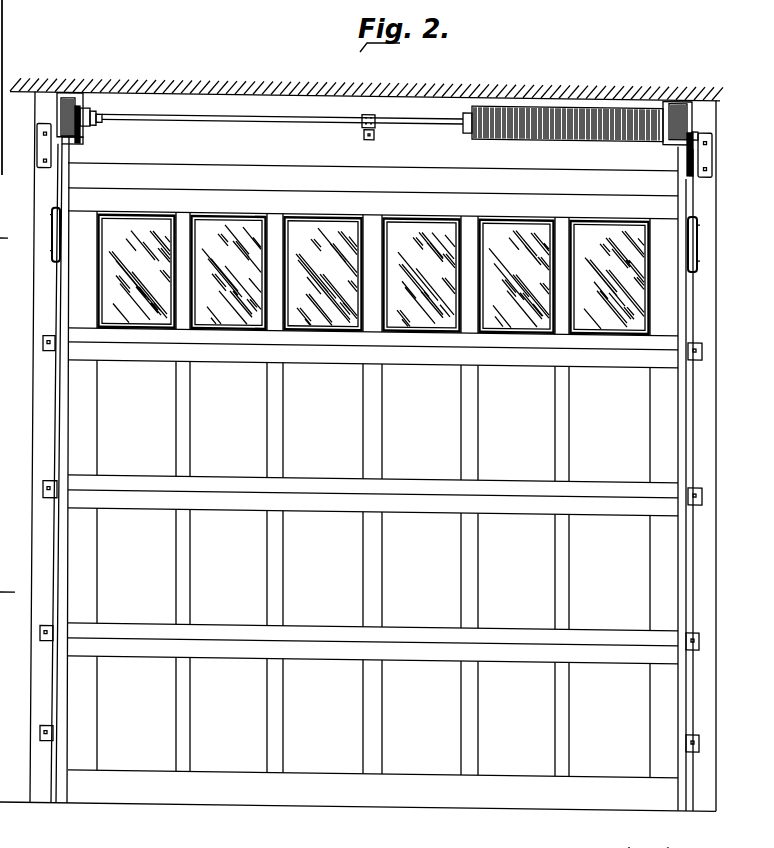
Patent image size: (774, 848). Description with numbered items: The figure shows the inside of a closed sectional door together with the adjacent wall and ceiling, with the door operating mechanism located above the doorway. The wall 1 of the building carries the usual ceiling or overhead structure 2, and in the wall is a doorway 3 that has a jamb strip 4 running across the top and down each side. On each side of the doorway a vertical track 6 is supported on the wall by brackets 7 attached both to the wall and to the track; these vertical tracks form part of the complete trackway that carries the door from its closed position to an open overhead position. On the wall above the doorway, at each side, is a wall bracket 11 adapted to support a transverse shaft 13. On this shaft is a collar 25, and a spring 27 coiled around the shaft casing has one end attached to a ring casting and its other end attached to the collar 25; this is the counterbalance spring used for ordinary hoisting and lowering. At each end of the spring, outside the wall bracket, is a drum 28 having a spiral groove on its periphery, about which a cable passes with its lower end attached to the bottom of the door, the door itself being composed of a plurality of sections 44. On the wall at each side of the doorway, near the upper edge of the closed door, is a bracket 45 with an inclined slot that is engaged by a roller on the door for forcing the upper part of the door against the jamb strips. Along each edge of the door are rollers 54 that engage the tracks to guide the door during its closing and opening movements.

The wall 1 is at (21, 144).
The ceiling 2 is at (259, 58).
The doorway 3 is at (216, 90).
The jamb strip 4 is at (42, 94).
The vertical track 6 is at (0, 184).
The bracket 7 is at (47, 479).
The wall bracket 11 is at (65, 97).
The transverse shaft 13 is at (183, 116).
The collar 25 is at (463, 117).
The spring 27 is at (573, 120).
The drum 28 is at (77, 97).
The sections 44 is at (80, 519).
The bracket 45 is at (54, 211).
The rollers 54 is at (15, 411).